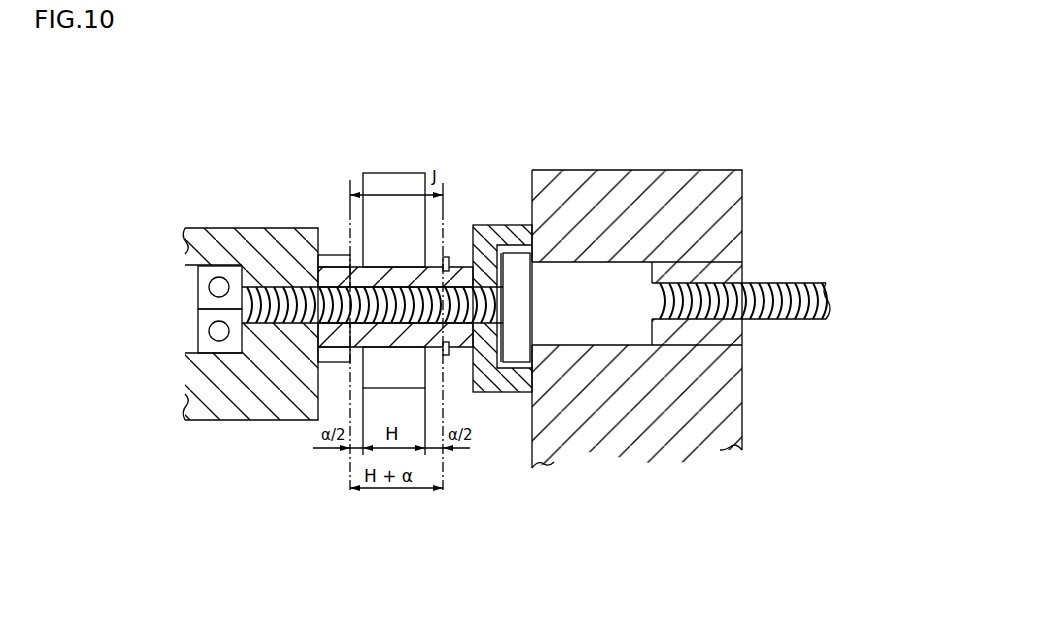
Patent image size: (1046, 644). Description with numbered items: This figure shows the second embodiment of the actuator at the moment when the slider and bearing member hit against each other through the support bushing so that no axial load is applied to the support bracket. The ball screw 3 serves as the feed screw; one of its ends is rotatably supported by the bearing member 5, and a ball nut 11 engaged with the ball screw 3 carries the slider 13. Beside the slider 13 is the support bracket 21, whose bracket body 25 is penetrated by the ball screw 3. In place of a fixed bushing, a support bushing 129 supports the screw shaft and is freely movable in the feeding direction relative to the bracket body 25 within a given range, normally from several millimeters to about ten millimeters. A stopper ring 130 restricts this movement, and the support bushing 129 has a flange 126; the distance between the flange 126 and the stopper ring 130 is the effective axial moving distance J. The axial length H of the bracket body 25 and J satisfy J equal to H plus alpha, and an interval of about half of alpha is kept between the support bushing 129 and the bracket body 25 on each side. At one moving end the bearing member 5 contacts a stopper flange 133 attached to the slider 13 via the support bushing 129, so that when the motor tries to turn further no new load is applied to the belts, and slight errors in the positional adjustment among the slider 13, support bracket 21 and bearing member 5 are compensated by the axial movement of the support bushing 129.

The ball screw 3 is at (754, 320).
The bearing member 5 is at (233, 228).
The ball nut 11 is at (588, 336).
The slider 13 is at (637, 326).
The support bracket 21 is at (363, 216).
The bracket body 25 is at (412, 172).
The flange 126 is at (328, 252).
The support bushing 129 is at (337, 248).
The stopper ring 130 is at (447, 255).
The stopper flange 133 is at (508, 393).